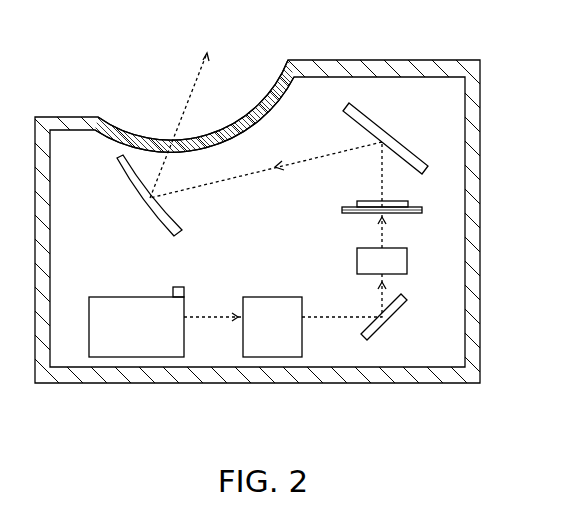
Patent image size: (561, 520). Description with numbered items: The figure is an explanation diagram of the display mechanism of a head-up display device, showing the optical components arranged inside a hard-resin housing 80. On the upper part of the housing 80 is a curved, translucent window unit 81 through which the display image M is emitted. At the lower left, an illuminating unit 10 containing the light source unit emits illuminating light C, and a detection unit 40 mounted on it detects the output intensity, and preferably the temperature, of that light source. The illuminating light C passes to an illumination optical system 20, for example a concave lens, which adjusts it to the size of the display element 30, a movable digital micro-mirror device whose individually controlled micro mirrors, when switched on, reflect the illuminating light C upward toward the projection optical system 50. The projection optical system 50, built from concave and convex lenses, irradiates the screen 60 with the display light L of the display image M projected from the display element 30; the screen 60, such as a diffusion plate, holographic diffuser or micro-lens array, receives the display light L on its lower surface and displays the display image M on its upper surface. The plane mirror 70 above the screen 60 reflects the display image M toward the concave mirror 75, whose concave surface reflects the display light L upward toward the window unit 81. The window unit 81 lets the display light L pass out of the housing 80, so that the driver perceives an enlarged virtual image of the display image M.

The housing 80 is at (415, 60).
The window unit 81 is at (262, 101).
The concave mirror 75 is at (121, 169).
The plane mirror 70 is at (395, 143).
The display image M is at (400, 201).
The screen 60 is at (412, 212).
The projection optical system 50 is at (408, 257).
The display element 30 is at (404, 309).
The illuminating unit 10 is at (131, 297).
The detection unit 40 is at (177, 287).
The illumination optical system 20 is at (270, 297).
The illuminating light C is at (210, 313).
The display light L is at (304, 162).